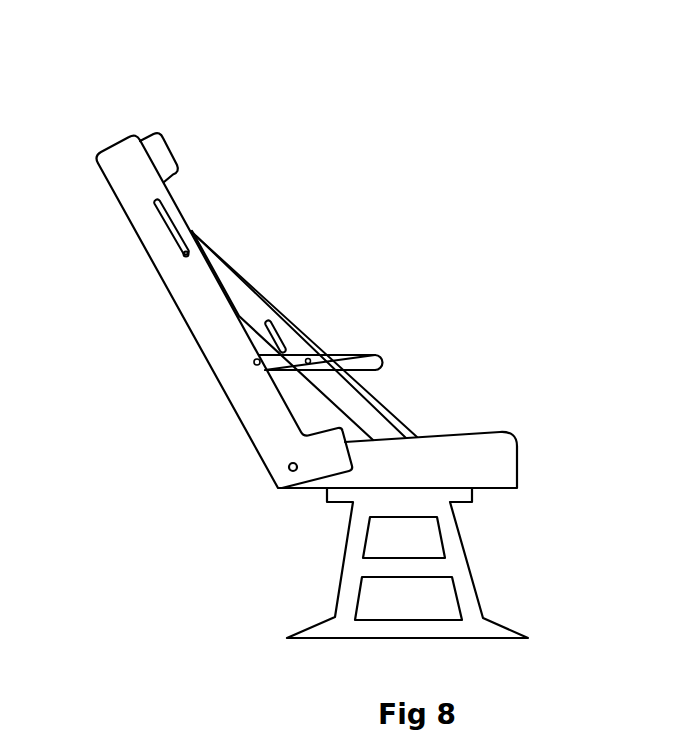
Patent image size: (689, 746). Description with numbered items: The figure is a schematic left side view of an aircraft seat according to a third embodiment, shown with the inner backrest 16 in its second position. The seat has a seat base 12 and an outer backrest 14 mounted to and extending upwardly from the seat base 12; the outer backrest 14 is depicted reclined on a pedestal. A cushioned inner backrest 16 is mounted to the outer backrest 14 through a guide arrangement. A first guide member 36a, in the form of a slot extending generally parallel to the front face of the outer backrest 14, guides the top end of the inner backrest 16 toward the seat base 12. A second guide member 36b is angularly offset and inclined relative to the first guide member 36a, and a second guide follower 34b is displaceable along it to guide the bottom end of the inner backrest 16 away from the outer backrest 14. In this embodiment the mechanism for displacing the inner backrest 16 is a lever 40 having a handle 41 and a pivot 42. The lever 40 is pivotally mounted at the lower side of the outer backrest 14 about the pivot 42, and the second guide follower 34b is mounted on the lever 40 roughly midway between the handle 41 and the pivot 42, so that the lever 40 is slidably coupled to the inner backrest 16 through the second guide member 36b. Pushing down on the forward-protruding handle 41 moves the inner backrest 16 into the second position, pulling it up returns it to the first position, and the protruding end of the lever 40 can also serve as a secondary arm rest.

The seat base 12 is at (502, 462).
The outer backrest 14 is at (192, 291).
The inner backrest 16 is at (373, 418).
The second guide follower 34b is at (311, 357).
The first guide member 36a is at (172, 224).
The second guide member 36b is at (285, 346).
The lever 40 is at (352, 358).
The handle 41 is at (384, 362).
The pivot 42 is at (254, 363).